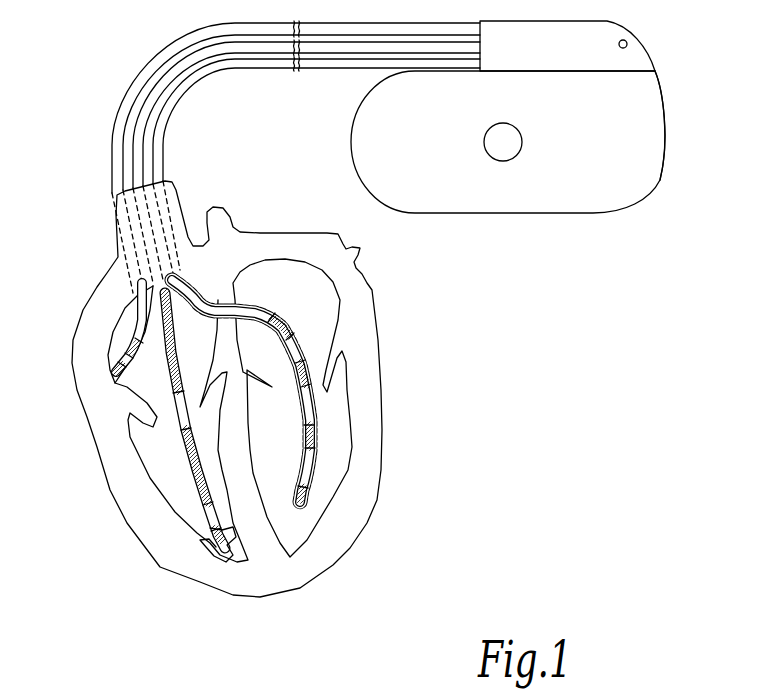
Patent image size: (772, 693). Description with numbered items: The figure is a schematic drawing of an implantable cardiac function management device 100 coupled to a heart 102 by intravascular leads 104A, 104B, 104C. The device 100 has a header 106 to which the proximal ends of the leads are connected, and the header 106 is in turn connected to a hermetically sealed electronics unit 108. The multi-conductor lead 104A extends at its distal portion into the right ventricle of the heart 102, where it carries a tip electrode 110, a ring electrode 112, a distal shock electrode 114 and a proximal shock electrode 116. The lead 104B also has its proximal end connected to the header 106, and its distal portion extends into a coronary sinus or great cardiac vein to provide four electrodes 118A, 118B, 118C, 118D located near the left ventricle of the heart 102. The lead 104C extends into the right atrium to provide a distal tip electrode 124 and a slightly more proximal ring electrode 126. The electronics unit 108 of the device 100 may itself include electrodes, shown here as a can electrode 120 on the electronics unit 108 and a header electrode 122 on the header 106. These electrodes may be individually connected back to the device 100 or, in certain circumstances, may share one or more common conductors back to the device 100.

The implantable cardiac function management device 100 is at (574, 204).
The heart 102 is at (295, 588).
The lead 104A is at (134, 148).
The lead 104B is at (265, 68).
The lead 104C is at (112, 172).
The header 106 is at (652, 50).
The hermetically sealed electronics unit 108 is at (668, 116).
The tip electrode 110 is at (232, 560).
The ring electrode 112 is at (208, 524).
The distal shock electrode 114 is at (192, 460).
The proximal shock electrode 116 is at (176, 325).
The electrode 118A is at (310, 503).
The electrode 118B is at (316, 430).
The electrode 118C is at (310, 373).
The electrode 118D is at (267, 322).
The can electrode 120 is at (484, 142).
The header electrode 122 is at (618, 44).
The distal tip electrode 124 is at (114, 384).
The ring electrode 126 is at (134, 348).